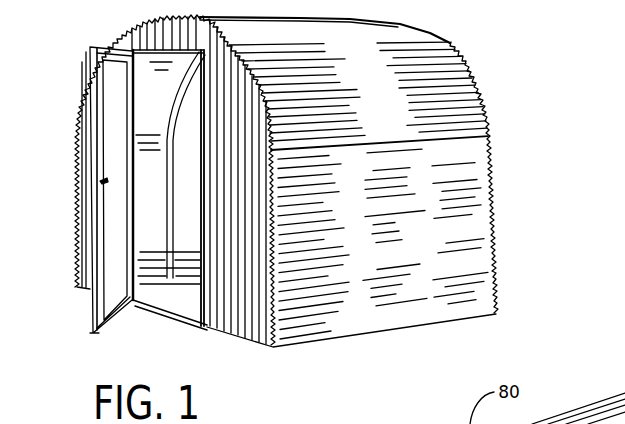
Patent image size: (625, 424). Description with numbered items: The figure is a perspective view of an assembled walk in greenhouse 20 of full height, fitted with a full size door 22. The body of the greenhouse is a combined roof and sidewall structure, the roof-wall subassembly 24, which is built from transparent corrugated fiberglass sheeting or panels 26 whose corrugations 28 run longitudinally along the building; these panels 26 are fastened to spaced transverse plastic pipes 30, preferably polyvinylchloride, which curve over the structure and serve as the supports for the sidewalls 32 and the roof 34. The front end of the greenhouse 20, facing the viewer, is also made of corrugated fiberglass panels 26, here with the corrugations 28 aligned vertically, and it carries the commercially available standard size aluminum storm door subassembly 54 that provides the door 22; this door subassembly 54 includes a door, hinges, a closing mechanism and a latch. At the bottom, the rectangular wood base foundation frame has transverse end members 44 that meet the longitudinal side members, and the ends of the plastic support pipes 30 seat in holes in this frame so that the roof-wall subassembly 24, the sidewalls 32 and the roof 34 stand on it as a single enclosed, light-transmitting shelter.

The walk in greenhouse 20 is at (454, 42).
The full size door 22 is at (95, 45).
The roof-wall subassembly 24 is at (494, 98).
The corrugated fiberglass panels 26 is at (493, 208).
The corrugations 28 is at (478, 131).
The transverse plastic pipes 30 is at (162, 286).
The sidewalls 32 is at (493, 177).
The roof 34 is at (472, 79).
The transverse end members 44 is at (177, 318).
The storm door subassembly 54 is at (86, 53).